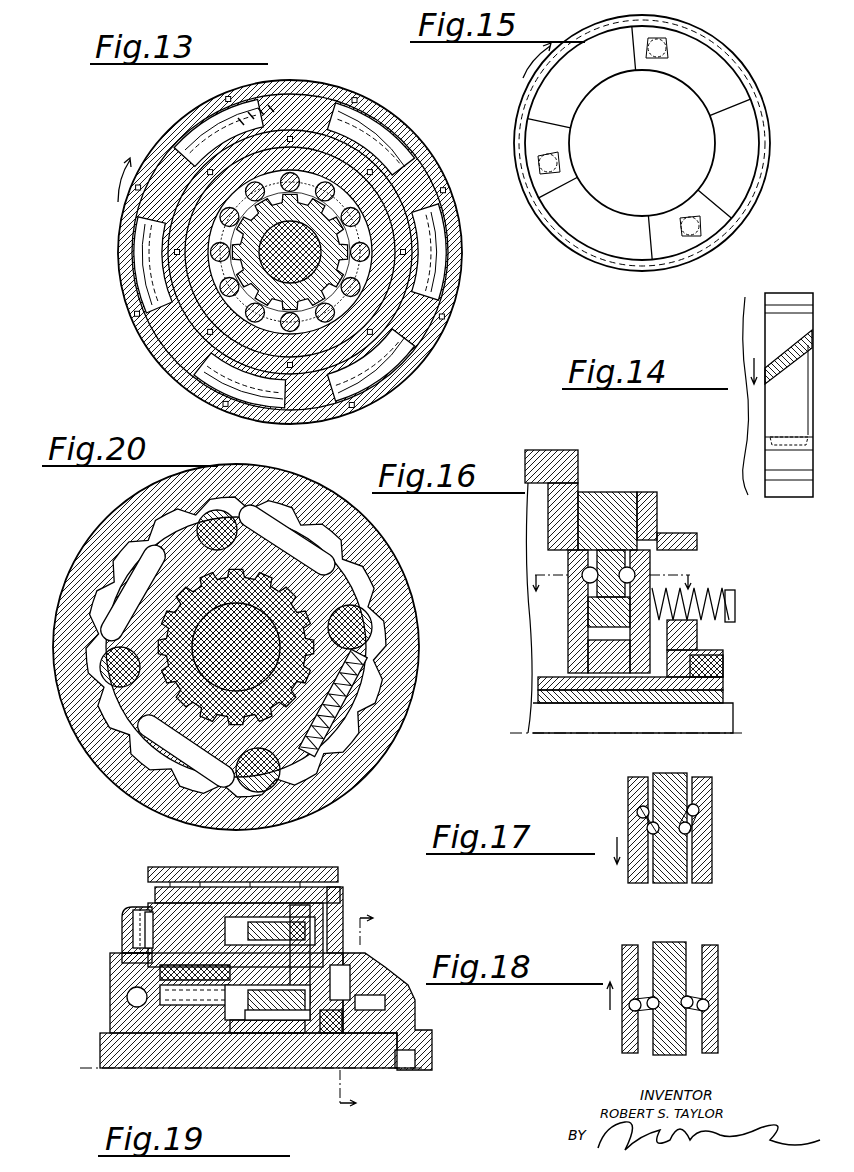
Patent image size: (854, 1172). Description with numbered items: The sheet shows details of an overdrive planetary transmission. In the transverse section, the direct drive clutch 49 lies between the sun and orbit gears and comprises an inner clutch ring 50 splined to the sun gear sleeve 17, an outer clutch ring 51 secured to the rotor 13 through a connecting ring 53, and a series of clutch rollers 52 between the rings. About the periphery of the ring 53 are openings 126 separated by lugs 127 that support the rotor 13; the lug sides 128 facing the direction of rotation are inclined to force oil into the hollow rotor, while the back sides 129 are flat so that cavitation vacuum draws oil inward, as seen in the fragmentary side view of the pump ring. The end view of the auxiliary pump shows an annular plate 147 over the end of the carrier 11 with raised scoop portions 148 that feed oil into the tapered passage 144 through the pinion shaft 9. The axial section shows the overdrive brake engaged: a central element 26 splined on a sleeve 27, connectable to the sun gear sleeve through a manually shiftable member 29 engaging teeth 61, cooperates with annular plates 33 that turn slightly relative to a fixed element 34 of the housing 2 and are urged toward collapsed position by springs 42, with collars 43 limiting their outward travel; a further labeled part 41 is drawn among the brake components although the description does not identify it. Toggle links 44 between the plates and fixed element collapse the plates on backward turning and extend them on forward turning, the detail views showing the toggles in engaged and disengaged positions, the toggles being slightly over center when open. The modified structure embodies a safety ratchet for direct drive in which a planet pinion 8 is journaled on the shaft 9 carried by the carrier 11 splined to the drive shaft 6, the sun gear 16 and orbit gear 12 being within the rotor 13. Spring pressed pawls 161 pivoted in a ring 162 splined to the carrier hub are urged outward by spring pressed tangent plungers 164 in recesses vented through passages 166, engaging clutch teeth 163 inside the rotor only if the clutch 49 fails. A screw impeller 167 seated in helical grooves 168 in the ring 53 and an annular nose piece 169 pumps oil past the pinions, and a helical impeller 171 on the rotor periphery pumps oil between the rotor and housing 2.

In FIG. 16, the housing 2 is at (540, 452).
In FIG. 19, the housing 2 is at (172, 860).
In FIG. 16, the drive shaft 6 is at (540, 714).
In FIG. 19, the drive shaft 6 is at (180, 1060).
In FIG. 19, the planet pinion 8 is at (302, 895).
In FIG. 19, the short shaft 9 is at (258, 1040).
In FIG. 19, the carrier 11 is at (325, 1040).
In FIG. 13, the orbit gear 12 is at (248, 100).
In FIG. 19, the orbit gear 12 is at (285, 935).
In FIG. 13, the rotor 13 is at (213, 97).
In FIG. 20, the rotor 13 is at (395, 724).
In FIG. 19, the rotor 13 is at (238, 890).
In FIG. 19, the sun gear 16 is at (290, 1030).
In FIG. 13, the sleeve 17 is at (330, 275).
In FIG. 16, the sleeve 17 is at (740, 705).
In FIG. 16, the central element 26 is at (600, 690).
In FIG. 16, the sleeve 27 is at (623, 700).
In FIG. 16, the manually shiftable member 29 is at (698, 648).
In FIG. 16, the annular plates 33 is at (574, 633).
In FIG. 17, the annular plates 33 is at (630, 780).
In FIG. 18, the annular plates 33 is at (718, 950).
In FIG. 16, the fixed element 34 is at (603, 505).
In FIG. 17, the fixed element 34 is at (680, 775).
In FIG. 18, the fixed element 34 is at (672, 950).
In FIG. 16, the block 41 is at (596, 611).
In FIG. 16, the springs 42 is at (728, 590).
In FIG. 16, the collars 43 is at (730, 612).
In FIG. 16, the toggle links 44 is at (630, 570).
In FIG. 17, the toggle links 44 is at (640, 808).
In FIG. 18, the toggle links 44 is at (706, 1003).
In FIG. 19, the overrunning clutch 49 is at (195, 972).
In FIG. 13, the inner clutch ring 50 is at (338, 207).
In FIG. 13, the outer clutch ring 51 is at (392, 216).
In FIG. 13, the clutch rollers 52 is at (372, 253).
In FIG. 13, the connecting ring 53 is at (345, 150).
In FIG. 19, the connecting ring 53 is at (128, 988).
In FIG. 16, the teeth 61 is at (710, 665).
In FIG. 13, the openings 126 is at (290, 230).
In FIG. 13, the lugs 127 is at (292, 96).
In FIG. 14, the lugs 127 is at (780, 330).
In FIG. 14, the lug sides 128 is at (790, 372).
In FIG. 14, the back sides 129 is at (804, 437).
In FIG. 15, the tapered passage 144 is at (641, 73).
In FIG. 15, the annular plate 147 is at (745, 97).
In FIG. 15, the scoop portions 148 is at (682, 58).
In FIG. 20, the pawls 161 is at (372, 638).
In FIG. 19, the pawls 161 is at (345, 975).
In FIG. 20, the ring 162 is at (352, 597).
In FIG. 19, the ring 162 is at (372, 1003).
In FIG. 20, the clutch teeth 163 is at (360, 540).
In FIG. 20, the tangent plungers 164 is at (192, 770).
In FIG. 20, the passages 166 is at (100, 745).
In FIG. 19, the impeller 167 is at (146, 928).
In FIG. 19, the helical grooves 168 is at (145, 905).
In FIG. 19, the nose piece 169 is at (140, 910).
In FIG. 19, the helical impeller 171 is at (215, 888).